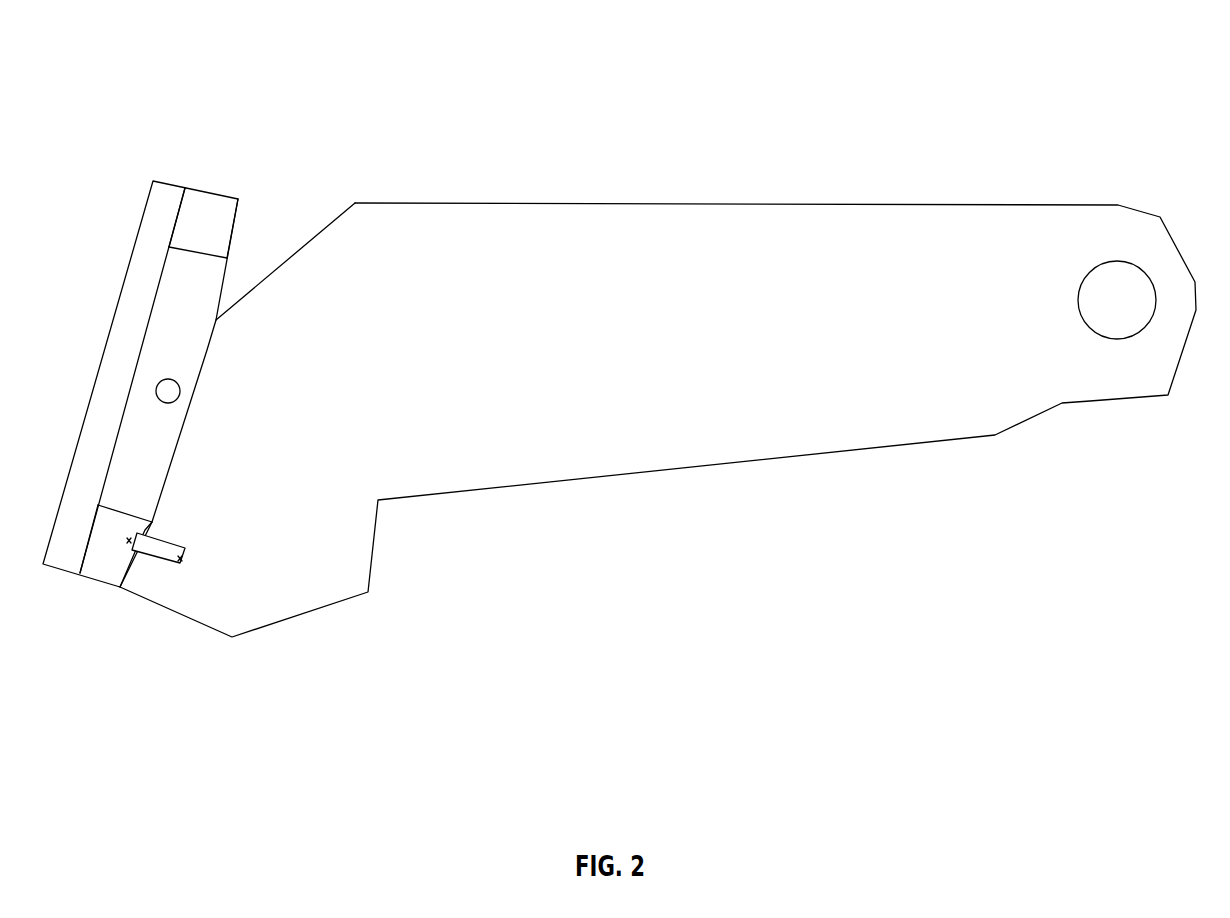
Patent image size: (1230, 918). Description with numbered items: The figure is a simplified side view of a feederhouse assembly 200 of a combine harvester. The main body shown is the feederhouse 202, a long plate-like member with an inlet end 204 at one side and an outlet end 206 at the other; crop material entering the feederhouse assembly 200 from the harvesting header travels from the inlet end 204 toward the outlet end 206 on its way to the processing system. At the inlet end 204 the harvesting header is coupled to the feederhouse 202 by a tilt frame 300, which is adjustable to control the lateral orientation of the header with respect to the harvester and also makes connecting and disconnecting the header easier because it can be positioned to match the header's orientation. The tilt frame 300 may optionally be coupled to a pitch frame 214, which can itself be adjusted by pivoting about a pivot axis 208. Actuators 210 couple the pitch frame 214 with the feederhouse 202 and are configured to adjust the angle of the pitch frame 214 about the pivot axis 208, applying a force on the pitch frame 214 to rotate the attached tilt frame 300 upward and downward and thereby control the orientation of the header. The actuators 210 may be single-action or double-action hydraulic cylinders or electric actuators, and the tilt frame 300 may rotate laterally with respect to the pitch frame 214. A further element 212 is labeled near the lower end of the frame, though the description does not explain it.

The feederhouse assembly 200 is at (912, 93).
The feederhouse 202 is at (473, 375).
The inlet end 204 is at (282, 280).
The outlet end 206 is at (1042, 273).
The pivot axis 208 is at (158, 380).
The actuators 210 is at (157, 562).
The lower portion of bracket 212 is at (128, 540).
The pitch frame 214 is at (212, 190).
The tilt frame 300 is at (147, 205).